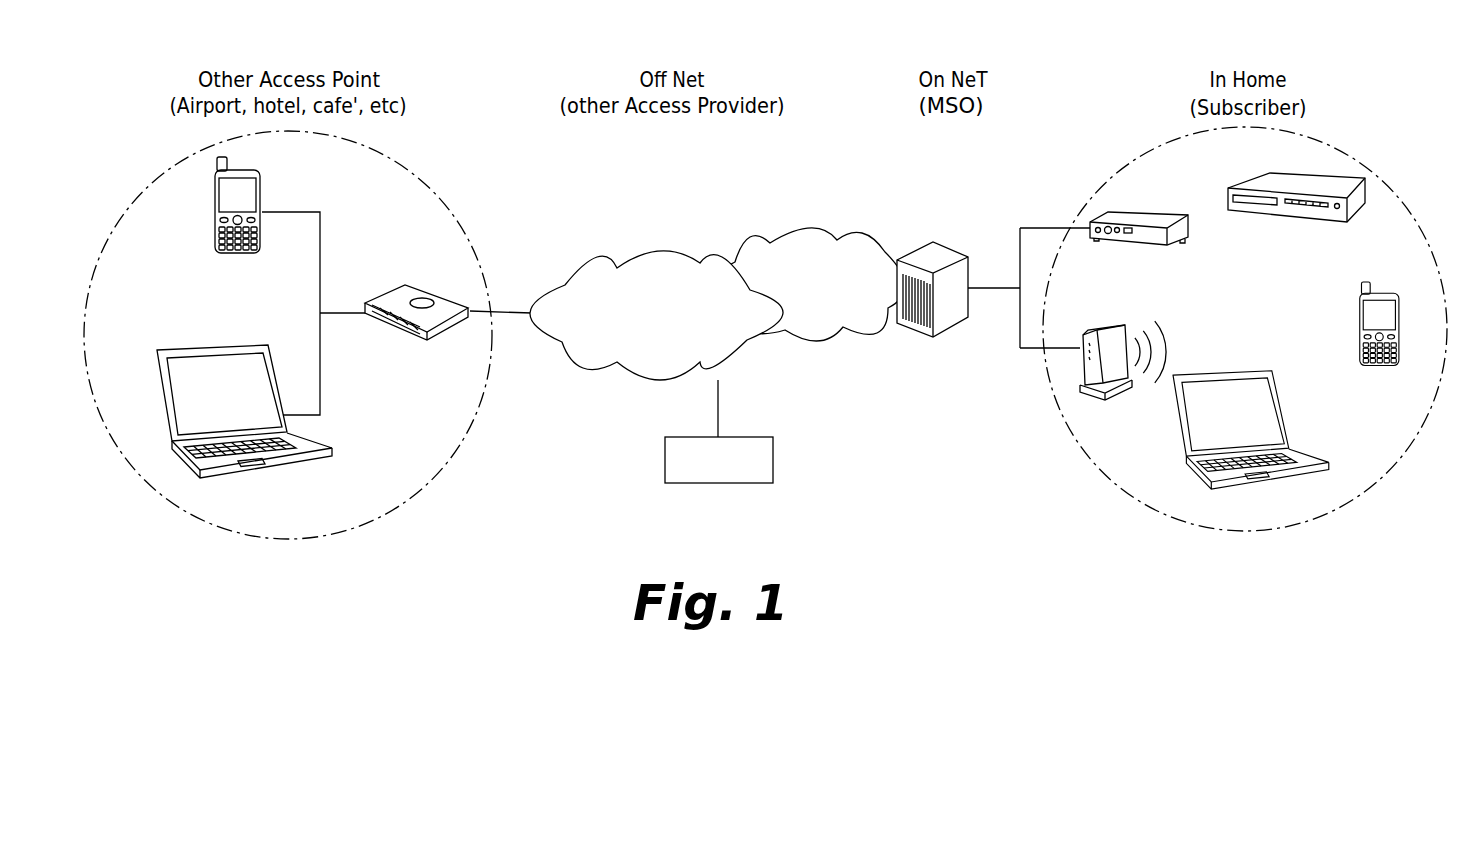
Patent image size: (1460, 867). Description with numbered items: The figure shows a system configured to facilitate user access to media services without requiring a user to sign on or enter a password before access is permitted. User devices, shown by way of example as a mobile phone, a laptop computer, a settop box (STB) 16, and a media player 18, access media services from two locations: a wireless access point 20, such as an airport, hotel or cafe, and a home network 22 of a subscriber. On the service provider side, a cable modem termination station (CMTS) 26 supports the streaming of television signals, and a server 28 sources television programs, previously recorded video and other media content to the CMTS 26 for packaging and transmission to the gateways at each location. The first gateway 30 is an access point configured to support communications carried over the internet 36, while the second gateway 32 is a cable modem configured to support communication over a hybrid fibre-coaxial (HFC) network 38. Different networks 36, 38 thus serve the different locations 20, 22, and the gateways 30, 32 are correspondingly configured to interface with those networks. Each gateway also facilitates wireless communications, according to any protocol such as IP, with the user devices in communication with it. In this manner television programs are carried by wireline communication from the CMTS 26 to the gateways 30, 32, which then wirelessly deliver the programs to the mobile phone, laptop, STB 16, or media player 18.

The settop box (STB) 16 is at (1153, 212).
The media player 18 is at (1310, 175).
The wireless access point 20 is at (428, 182).
The home network 22 is at (1387, 181).
The cable modem termination station (CMTS) 26 is at (948, 248).
The server 28 is at (773, 462).
The first gateway (access point) 30 is at (435, 297).
The second gateway (cable modem) 32 is at (1118, 327).
The internet 36 is at (662, 252).
The hybrid fibre-coaxial (HFC) network 38 is at (810, 228).